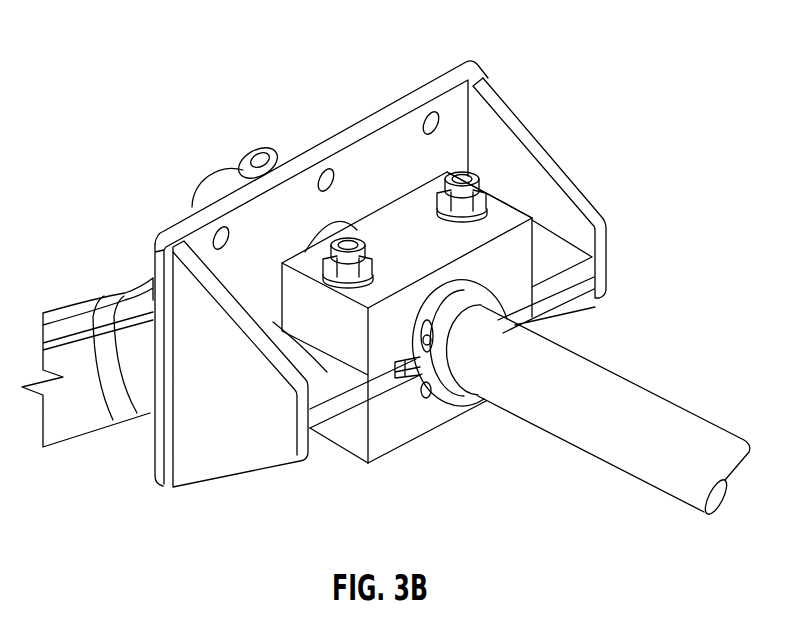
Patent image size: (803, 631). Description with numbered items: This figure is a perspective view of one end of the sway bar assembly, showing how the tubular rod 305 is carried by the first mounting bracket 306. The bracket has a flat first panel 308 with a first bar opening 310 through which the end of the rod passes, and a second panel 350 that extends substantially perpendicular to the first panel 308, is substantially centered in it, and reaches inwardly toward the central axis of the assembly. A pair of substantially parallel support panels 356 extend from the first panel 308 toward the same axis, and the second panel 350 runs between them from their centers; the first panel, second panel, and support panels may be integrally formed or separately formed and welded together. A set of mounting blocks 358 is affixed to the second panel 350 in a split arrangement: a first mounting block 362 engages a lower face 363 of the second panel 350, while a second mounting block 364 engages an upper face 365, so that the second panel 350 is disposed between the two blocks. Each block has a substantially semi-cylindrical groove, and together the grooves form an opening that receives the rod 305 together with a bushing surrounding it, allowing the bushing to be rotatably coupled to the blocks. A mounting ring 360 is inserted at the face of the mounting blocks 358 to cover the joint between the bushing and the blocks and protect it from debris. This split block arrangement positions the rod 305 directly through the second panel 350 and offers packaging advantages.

The tube 305 is at (610, 445).
The first mounting bracket 306 is at (180, 216).
The first panel 308 is at (442, 72).
The first bar opening 310 is at (320, 222).
The second panel 350 is at (547, 245).
The support panels 356 is at (520, 115).
The set of mounting blocks 358 is at (445, 448).
The mounting ring 360 is at (533, 320).
The first mounting block 362 is at (357, 440).
The lower face 363 is at (388, 448).
The second mounting block 364 is at (410, 217).
The upper face 365 is at (288, 343).